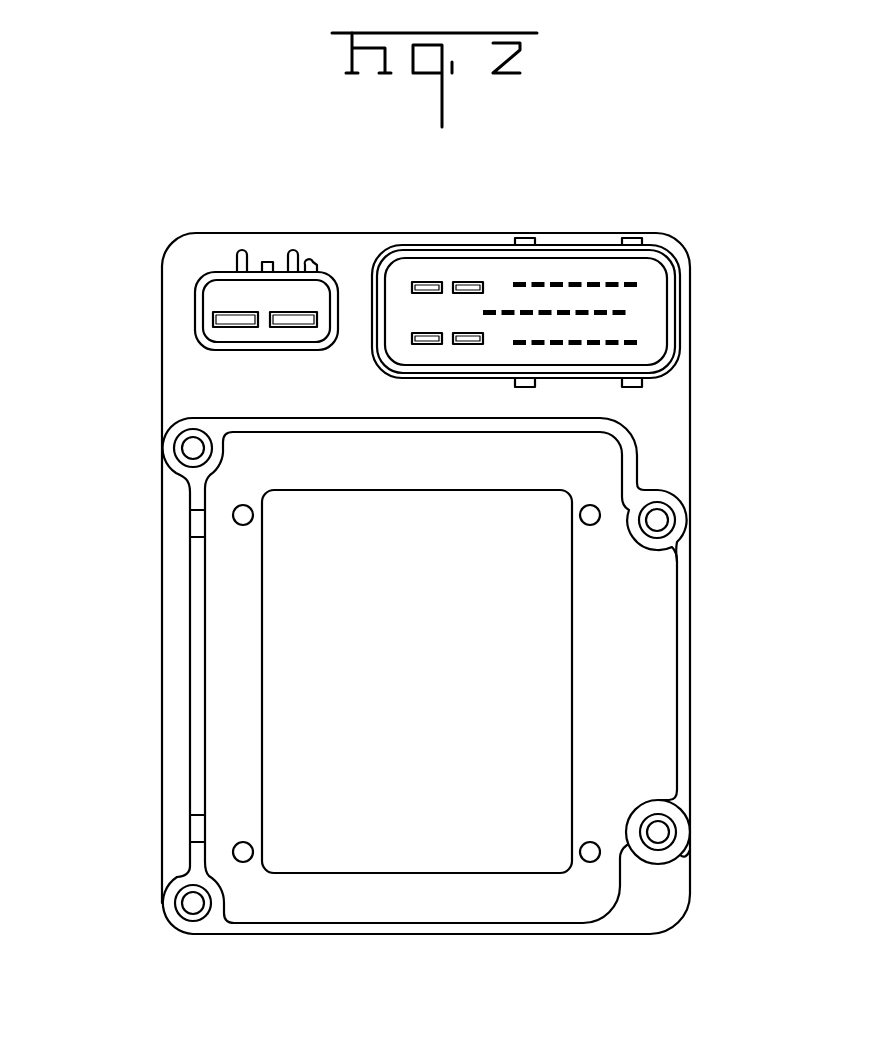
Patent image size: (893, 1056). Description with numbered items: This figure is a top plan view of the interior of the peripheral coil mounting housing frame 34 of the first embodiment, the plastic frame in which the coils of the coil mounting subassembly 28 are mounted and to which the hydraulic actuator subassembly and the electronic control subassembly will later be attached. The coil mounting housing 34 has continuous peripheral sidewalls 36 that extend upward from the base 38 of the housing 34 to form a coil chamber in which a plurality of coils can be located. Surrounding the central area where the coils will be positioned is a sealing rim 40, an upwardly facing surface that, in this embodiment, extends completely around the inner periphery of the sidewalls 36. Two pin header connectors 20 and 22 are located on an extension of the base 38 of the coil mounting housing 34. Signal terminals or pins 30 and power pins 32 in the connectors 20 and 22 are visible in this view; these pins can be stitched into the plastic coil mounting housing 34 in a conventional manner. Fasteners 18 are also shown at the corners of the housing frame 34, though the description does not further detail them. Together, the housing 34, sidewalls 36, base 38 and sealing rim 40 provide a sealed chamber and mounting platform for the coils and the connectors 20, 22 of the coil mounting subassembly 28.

The fasteners (screws) 18 is at (173, 437).
The pin header connector 20 is at (600, 252).
The pin header connector 22 is at (305, 275).
The coil mounting subassembly 28 is at (714, 323).
The signal terminals or pins 30 is at (557, 282).
The power pins 32 is at (225, 312).
The coil mounting housing 34 is at (163, 567).
The peripheral sidewalls 36 is at (193, 695).
The base 38 is at (177, 258).
The sealing rim 40 is at (238, 623).